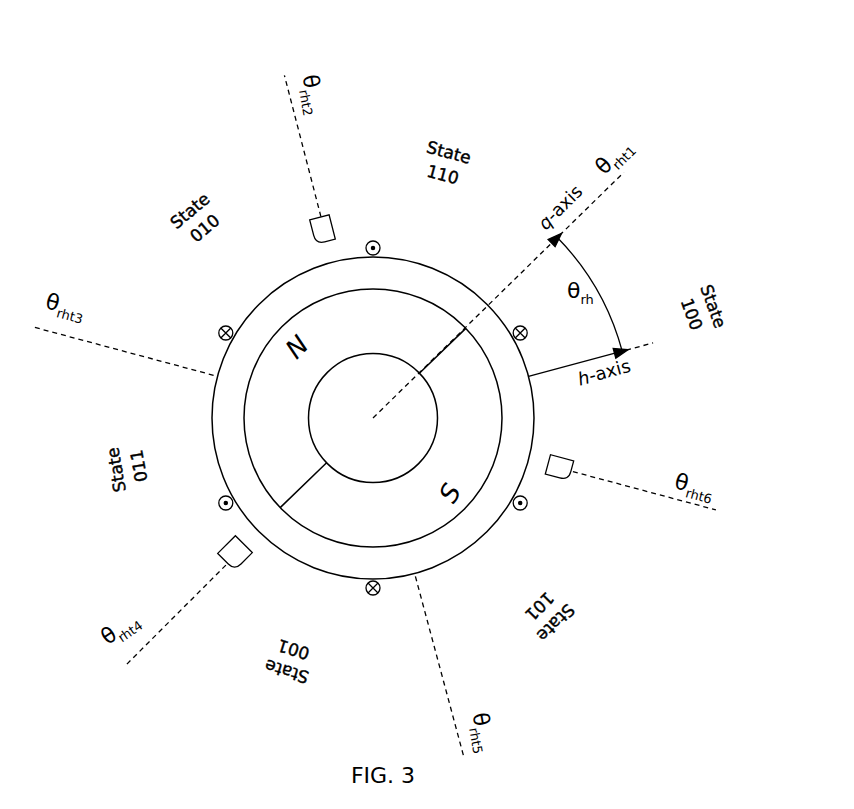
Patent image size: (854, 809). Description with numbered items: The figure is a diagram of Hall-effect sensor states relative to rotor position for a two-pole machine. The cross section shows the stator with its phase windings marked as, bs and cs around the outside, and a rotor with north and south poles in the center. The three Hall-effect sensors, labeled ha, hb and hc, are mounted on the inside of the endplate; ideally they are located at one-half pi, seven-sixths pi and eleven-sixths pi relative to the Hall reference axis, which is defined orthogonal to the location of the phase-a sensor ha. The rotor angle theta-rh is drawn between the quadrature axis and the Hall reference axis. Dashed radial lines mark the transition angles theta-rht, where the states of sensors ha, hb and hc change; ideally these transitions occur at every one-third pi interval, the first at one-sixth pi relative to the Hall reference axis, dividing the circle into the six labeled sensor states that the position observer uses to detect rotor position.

The Hall-effect sensor ha is at (328, 210).
The Hall-effect sensor hb is at (235, 572).
The Hall-effect sensor hc is at (572, 480).
The as-axis as is at (375, 420).
The phase b stator winding bs is at (359, 414).
The phase c stator winding cs is at (361, 428).